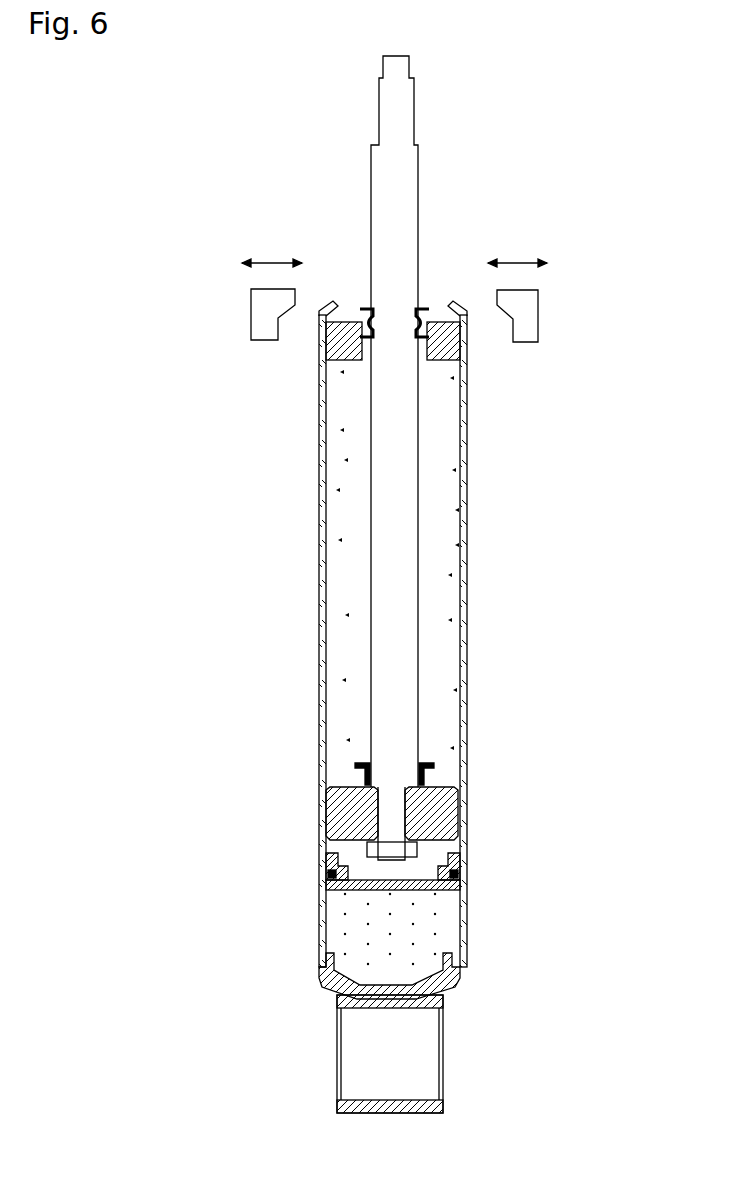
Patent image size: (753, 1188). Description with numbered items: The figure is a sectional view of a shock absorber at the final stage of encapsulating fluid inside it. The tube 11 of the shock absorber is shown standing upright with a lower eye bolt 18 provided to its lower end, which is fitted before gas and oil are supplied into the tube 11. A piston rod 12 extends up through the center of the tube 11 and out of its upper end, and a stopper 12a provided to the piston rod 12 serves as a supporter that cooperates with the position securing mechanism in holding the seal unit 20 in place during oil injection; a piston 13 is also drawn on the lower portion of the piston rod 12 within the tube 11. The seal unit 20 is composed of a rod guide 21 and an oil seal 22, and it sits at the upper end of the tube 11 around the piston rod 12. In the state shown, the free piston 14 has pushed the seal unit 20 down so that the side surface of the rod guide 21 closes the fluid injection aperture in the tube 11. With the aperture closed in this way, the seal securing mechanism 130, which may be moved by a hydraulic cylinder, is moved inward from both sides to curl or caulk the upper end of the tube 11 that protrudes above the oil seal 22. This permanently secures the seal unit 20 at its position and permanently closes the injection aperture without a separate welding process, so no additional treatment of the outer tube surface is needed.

The tube 11 is at (465, 642).
The piston rod 12 is at (381, 200).
The stopper 12a is at (430, 762).
The piston valve 13 is at (440, 812).
The free piston 14 is at (405, 893).
The lower eye bolt 18 is at (443, 1058).
The seal unit 20 is at (417, 322).
The rod guide 21 is at (442, 361).
The oil seal 22 is at (460, 336).
The seal securing mechanism 130 is at (257, 317).